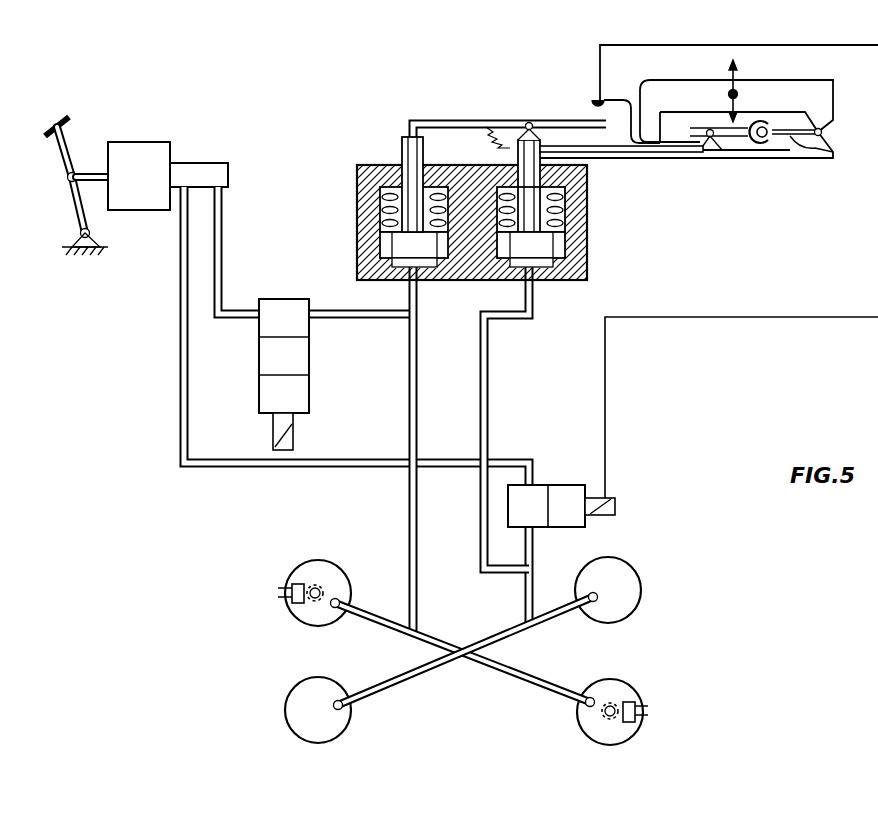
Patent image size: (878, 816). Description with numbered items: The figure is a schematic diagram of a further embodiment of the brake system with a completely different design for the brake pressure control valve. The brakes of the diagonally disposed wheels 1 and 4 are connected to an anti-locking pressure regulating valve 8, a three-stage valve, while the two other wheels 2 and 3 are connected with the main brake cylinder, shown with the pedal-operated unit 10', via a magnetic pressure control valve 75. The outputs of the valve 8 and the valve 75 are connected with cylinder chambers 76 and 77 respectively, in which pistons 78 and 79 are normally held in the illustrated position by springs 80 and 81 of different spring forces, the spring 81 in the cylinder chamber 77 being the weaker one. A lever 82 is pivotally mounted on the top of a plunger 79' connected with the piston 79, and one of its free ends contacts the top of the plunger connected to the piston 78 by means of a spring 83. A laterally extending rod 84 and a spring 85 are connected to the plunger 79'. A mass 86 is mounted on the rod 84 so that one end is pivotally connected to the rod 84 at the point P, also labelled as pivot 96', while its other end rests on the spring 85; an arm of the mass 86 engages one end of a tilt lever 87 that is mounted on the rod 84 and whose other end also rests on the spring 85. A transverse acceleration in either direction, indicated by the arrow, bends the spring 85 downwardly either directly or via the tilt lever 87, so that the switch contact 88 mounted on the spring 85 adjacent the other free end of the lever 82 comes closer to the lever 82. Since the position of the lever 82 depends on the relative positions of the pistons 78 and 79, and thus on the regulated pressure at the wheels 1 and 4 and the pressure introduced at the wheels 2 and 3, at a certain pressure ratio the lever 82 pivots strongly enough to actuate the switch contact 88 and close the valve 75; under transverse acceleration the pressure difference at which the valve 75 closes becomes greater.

The wheel 1 is at (337, 576).
The wheel 2 is at (332, 696).
The wheel 3 is at (625, 580).
The wheel 4 is at (630, 693).
The anti-locking pressure regulating valve 8 is at (268, 357).
The brake pedal master unit 10' is at (136, 178).
The magnetic pressure control valve 75 is at (567, 495).
The cylinder chamber 76 is at (392, 283).
The cylinder chamber 77 is at (552, 283).
The piston 78 is at (378, 241).
The piston 79 is at (576, 227).
The plunger 79' is at (506, 153).
The spring 80 is at (378, 206).
The spring 81 is at (580, 209).
The lever 82 is at (437, 118).
The spring 83 is at (488, 139).
The rod 84 is at (790, 158).
The spring 85 is at (636, 150).
The mass 86 is at (648, 90).
The tilt lever 87 is at (748, 142).
The switch contact 88 is at (596, 100).
The pivot 96' is at (831, 168).
The point P is at (822, 131).